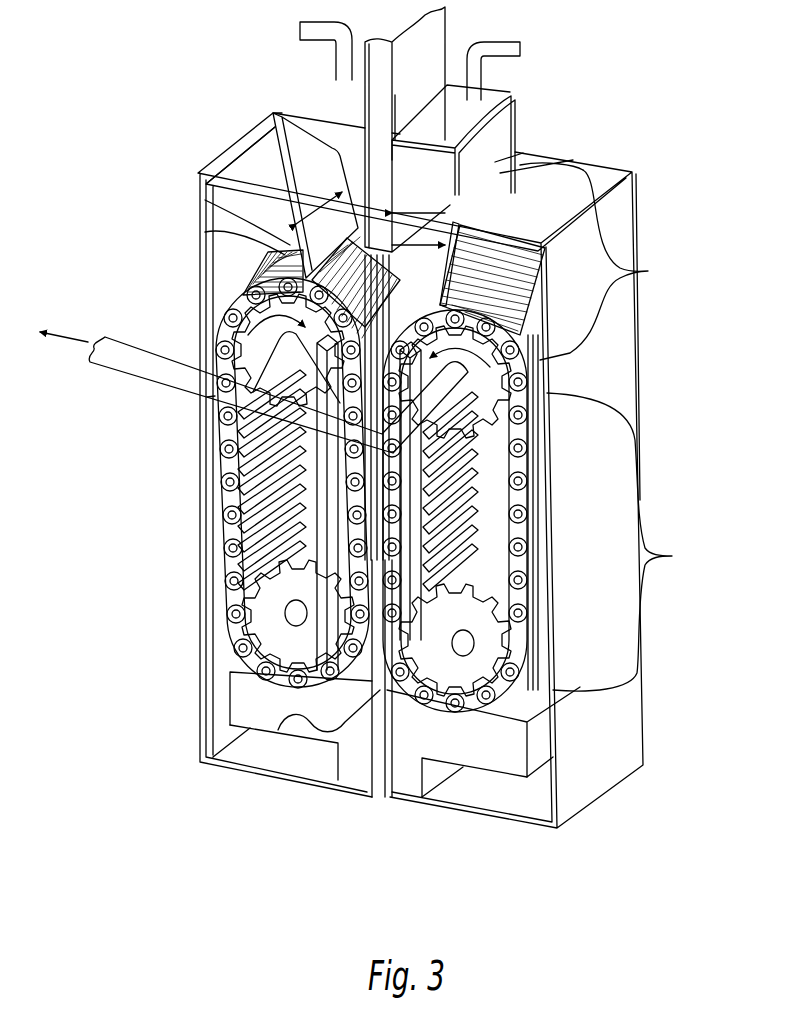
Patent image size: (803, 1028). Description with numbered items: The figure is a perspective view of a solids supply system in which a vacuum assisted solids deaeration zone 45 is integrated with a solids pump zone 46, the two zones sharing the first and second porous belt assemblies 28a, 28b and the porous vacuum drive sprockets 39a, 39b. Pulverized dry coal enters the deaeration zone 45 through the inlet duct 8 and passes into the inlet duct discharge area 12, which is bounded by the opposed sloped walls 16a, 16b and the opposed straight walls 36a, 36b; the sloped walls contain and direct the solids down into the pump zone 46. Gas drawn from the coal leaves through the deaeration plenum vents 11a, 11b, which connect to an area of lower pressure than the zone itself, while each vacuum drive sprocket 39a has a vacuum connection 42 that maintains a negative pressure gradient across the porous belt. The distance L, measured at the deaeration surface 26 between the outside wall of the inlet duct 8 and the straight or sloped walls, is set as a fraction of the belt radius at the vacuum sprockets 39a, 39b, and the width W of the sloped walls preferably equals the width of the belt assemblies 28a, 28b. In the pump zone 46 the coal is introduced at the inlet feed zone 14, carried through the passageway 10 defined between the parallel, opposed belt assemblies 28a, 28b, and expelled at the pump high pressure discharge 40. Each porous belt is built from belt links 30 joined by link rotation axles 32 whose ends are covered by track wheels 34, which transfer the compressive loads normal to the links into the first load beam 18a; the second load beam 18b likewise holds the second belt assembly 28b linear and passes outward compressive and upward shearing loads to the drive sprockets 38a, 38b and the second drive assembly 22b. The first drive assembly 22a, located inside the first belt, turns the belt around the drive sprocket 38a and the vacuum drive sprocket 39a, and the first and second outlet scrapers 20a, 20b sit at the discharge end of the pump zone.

The inlet duct 8 is at (426, 47).
The passageway 10 is at (278, 730).
The deaeration plenum vent 11a is at (298, 30).
The deaeration plenum vent 11b is at (506, 42).
The inlet duct discharge area 12 is at (257, 197).
The inlet feed zone 14 is at (207, 397).
The sloped wall 16a is at (274, 111).
The sloped wall 16b is at (516, 220).
The first load beam 18a is at (223, 547).
The second load beam 18b is at (540, 496).
The first outlet scraper 20a is at (270, 710).
The second outlet scraper 20b is at (495, 753).
The first drive assembly 22a is at (225, 632).
The second drive assembly 22b is at (538, 703).
The deaeration surface 26 is at (510, 112).
The first porous belt assembly 28a is at (257, 228).
The second porous belt assembly 28b is at (540, 290).
The belt links 30 is at (217, 482).
The link rotation axles 32 is at (217, 537).
The track wheels 34 is at (218, 350).
The straight wall 36a is at (265, 148).
The straight wall 36b is at (523, 153).
The drive sprocket 38a is at (250, 596).
The drive sprocket 38b is at (540, 613).
The vacuum drive sprocket 39a is at (233, 270).
The vacuum drive sprocket 39b is at (552, 378).
The pump high pressure discharge 40 is at (380, 800).
The vacuum connection 42 is at (133, 340).
The vacuum assisted solids deaeration zone 45 is at (648, 271).
The solids pump zone 46 is at (672, 556).
The width of the deaeration plenum sloped walls W is at (319, 205).
The distance between inlet duct wall and straight or sloped walls L is at (418, 229).